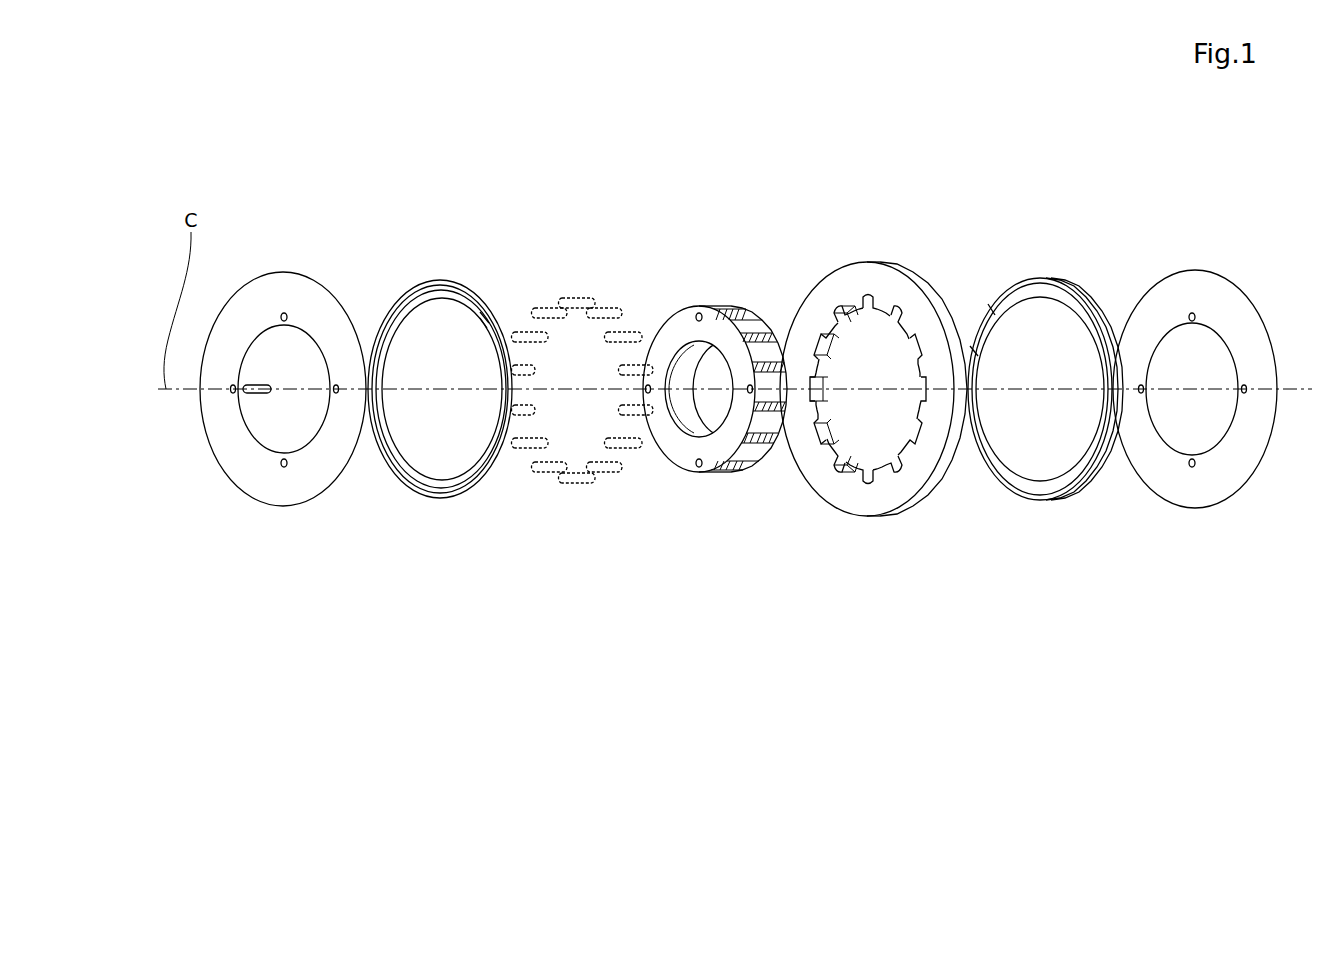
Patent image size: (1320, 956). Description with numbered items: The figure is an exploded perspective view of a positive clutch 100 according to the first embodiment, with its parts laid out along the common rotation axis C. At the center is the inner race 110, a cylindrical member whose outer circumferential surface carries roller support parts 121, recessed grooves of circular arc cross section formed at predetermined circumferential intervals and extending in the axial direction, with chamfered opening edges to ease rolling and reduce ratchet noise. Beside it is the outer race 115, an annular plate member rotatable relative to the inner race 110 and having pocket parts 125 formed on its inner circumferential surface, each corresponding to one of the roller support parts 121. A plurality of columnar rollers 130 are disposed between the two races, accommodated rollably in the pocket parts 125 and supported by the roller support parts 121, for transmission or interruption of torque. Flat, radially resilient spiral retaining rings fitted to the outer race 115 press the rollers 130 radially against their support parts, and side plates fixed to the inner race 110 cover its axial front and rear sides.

The positive clutch 100 is at (732, 700).
The inner race 110 is at (715, 385).
The outer race 115 is at (873, 404).
The roller support parts 121 is at (760, 322).
The pocket parts 125 is at (861, 302).
The rollers 130 is at (578, 483).